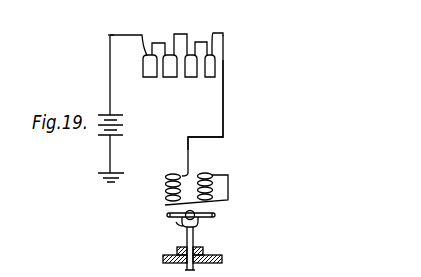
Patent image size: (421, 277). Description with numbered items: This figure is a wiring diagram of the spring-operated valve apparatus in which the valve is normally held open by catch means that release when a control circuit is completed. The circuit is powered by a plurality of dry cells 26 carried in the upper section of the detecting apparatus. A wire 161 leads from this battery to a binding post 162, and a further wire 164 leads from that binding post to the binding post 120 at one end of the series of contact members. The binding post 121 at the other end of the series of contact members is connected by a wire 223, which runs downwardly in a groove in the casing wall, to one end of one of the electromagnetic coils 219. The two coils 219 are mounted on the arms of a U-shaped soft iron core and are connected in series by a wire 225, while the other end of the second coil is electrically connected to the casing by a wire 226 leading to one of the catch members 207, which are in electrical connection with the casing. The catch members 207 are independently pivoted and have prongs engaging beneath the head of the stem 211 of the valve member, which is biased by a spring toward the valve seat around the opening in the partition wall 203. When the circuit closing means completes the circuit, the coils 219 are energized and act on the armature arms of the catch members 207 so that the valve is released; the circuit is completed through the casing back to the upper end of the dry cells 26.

The partition wall 203 is at (239, 88).
The wire 161 is at (110, 68).
The binding post 162 is at (110, 35).
The wire 164 is at (126, 35).
The binding post 120 is at (145, 40).
The binding post 121 is at (213, 32).
The wire 223 is at (228, 104).
The dry cells 26 is at (126, 122).
The electromagnetic coils 219 is at (207, 188).
The wire 226 is at (229, 190).
The wire 225 is at (165, 205).
The catch members 207 is at (200, 224).
The stem 211 is at (198, 241).